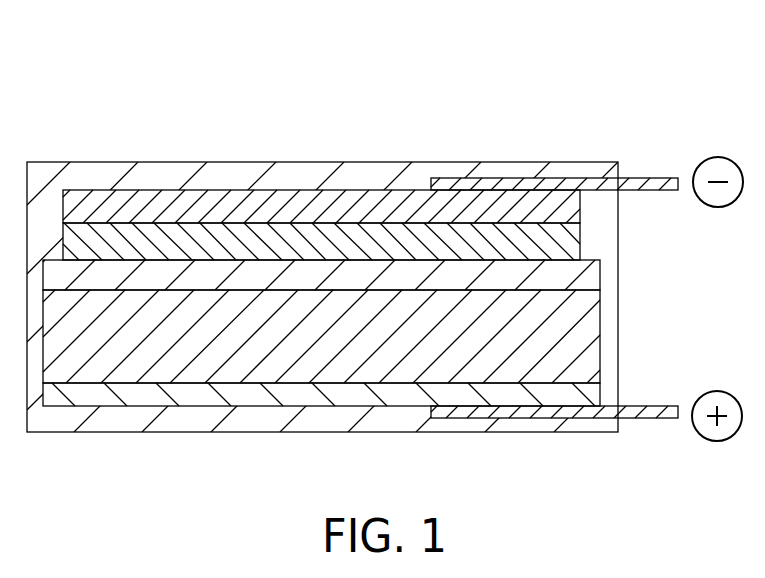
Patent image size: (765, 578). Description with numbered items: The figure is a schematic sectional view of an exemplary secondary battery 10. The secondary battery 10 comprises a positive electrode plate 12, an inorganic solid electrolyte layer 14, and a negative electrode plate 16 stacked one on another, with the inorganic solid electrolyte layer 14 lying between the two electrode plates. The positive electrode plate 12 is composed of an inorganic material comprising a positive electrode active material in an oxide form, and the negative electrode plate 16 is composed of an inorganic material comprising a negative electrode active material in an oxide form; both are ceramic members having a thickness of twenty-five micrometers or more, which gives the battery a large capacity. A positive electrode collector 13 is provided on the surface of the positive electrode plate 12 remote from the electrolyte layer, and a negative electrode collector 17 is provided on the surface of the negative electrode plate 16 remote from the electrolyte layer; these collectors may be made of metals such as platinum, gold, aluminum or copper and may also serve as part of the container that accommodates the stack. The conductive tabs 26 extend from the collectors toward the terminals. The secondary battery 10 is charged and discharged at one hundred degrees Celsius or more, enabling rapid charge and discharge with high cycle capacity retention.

The secondary battery 10 is at (498, 100).
The positive electrode plate 12 is at (582, 340).
The positive electrode collector 13 is at (587, 397).
The inorganic solid electrolyte layer 14 is at (598, 274).
The negative electrode plate 16 is at (573, 243).
The negative electrode collector 17 is at (570, 204).
The tab 26 is at (574, 178).